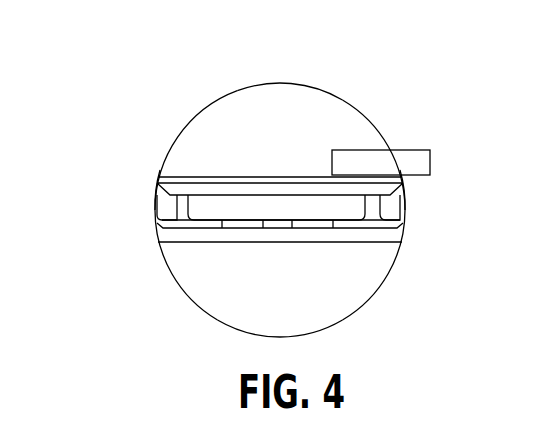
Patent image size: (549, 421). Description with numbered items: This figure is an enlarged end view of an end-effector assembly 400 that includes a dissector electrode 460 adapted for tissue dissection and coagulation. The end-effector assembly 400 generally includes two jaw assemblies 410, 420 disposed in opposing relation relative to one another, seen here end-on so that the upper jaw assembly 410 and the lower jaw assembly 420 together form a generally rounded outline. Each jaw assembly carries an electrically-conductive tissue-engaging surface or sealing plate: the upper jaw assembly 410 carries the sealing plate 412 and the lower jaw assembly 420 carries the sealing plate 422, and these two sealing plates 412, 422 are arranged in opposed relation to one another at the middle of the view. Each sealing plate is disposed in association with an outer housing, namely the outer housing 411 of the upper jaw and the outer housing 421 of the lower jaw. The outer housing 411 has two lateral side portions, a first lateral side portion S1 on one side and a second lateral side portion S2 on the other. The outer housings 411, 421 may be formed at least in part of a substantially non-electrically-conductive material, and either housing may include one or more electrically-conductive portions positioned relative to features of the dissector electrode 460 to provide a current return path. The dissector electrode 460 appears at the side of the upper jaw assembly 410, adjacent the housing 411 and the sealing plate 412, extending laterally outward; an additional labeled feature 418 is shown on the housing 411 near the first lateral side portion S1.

The end-effector assembly 400 is at (370, 58).
The jaw assembly 410 is at (169, 117).
The outer housing 411 is at (238, 85).
The sealing plate 412 is at (158, 186).
The side surface of upper body 418 is at (390, 142).
The jaw assembly 420 is at (389, 292).
The outer housing 421 is at (345, 322).
The sealing plate 422 is at (398, 236).
The dissector electrode 460 is at (423, 163).
The first lateral side portion S1 is at (377, 109).
The second lateral side portion S2 is at (149, 147).